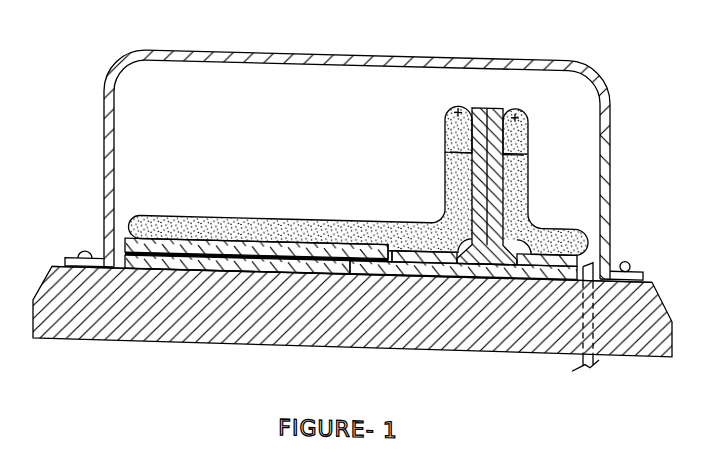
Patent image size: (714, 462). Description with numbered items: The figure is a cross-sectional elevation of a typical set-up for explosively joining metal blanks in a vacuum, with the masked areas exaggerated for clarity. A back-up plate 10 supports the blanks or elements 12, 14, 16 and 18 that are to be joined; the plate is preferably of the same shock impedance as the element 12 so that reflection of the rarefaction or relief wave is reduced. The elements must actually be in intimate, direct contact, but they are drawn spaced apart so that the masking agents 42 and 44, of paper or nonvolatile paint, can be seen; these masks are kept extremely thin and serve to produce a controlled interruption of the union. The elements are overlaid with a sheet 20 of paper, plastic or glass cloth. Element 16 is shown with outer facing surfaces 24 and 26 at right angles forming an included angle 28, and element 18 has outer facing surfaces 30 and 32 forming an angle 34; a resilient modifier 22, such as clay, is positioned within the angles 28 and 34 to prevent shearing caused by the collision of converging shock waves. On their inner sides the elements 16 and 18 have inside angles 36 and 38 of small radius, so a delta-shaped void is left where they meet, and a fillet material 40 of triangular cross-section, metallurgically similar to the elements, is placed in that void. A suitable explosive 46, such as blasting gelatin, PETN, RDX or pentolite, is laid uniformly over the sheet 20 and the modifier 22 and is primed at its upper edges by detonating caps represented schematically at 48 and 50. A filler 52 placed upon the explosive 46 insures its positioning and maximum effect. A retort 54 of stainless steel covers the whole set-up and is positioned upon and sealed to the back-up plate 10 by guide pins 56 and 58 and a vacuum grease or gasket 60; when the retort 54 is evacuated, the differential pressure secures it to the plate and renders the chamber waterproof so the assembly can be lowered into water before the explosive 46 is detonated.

The back-up plate 10 is at (225, 316).
The element 12 is at (358, 263).
The element 14 is at (277, 236).
The element 16 is at (456, 136).
The element 18 is at (527, 134).
The sheet 20 is at (186, 212).
The resilient modifier 22 is at (526, 179).
The outer facing surface 24 is at (410, 212).
The outer facing surface 26 is at (456, 161).
The included angle 28 is at (455, 211).
The outer facing surface 30 is at (514, 155).
The outer facing surface 32 is at (546, 235).
The angle 34 is at (505, 231).
The inside angle 36 is at (470, 250).
The inside angle 38 is at (504, 249).
The fillet material 40 is at (472, 262).
The masking agent 42 is at (160, 249).
The masking agent 44 is at (352, 253).
The explosive 46 is at (345, 223).
The detonating cap 48 is at (456, 100).
The detonating cap 50 is at (518, 100).
The filler 52 is at (288, 136).
The retort 54 is at (340, 47).
The guide pin 56 is at (640, 230).
The guide pin 58 is at (89, 247).
The vacuum grease or gasket 60 is at (66, 256).